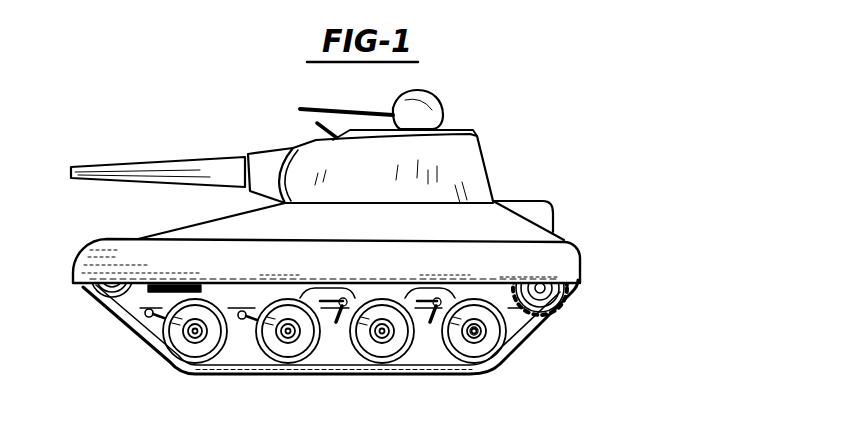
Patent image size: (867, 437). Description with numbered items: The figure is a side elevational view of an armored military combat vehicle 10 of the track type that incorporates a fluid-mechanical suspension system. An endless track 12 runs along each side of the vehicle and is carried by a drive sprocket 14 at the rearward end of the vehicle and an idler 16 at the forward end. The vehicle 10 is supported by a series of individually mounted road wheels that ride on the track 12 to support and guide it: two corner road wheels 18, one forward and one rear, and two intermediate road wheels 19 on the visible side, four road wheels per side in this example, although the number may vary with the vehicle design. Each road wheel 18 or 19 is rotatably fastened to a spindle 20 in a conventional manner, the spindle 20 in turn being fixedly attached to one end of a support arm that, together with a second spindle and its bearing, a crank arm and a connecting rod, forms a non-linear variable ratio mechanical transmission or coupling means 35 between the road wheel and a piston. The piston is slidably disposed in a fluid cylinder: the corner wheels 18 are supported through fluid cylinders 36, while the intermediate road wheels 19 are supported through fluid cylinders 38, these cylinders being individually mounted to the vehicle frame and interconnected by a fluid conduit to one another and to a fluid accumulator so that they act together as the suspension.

The armored military combat vehicle 10 is at (502, 135).
The endless track 12 is at (549, 327).
The drive sprocket 14 is at (575, 298).
The idler 16 is at (83, 292).
The corner road wheels 18 is at (191, 368).
The intermediate road wheels 19 is at (290, 365).
The spindle 20 is at (478, 335).
The non-linear variable ratio mechanical transmission 35 is at (148, 317).
The fluid cylinder 36 is at (420, 301).
The fluid cylinder 38 is at (322, 301).